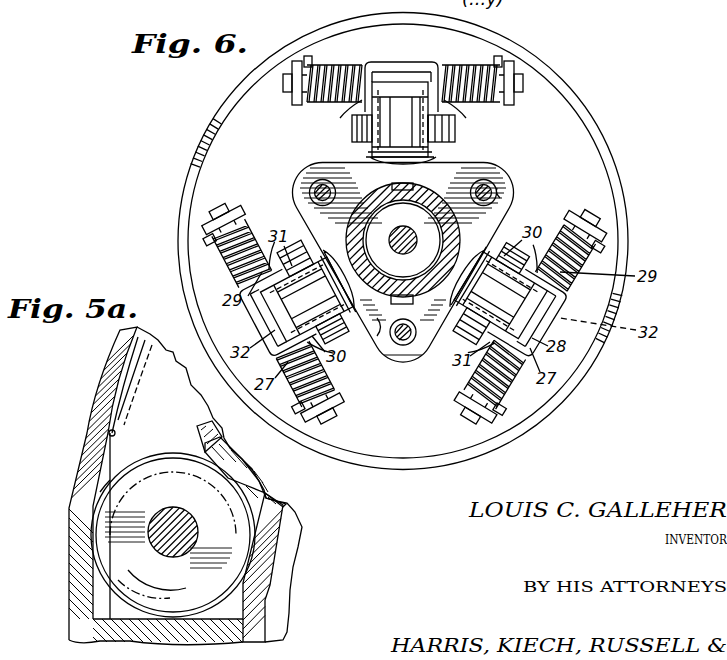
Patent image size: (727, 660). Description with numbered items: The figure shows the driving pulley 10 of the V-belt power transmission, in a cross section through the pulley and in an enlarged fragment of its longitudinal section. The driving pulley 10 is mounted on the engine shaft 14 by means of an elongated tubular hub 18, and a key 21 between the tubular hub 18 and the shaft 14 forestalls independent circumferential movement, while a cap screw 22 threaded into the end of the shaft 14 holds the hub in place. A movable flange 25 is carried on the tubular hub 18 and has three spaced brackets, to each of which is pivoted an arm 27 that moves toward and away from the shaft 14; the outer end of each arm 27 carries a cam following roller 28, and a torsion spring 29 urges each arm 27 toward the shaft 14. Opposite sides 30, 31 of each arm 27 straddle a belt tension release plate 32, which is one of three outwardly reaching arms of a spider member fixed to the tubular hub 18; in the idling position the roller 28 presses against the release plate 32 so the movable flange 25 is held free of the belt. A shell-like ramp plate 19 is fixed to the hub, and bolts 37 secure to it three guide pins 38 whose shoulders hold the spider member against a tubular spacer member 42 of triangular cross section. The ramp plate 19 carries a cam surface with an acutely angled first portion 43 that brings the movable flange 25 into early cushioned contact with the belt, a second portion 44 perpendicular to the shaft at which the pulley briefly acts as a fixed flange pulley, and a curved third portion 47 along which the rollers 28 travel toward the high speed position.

In FIG. 5A, the driving pulley 10 is at (150, 486).
In FIG. 6, the shaft 14 is at (425, 220).
In FIG. 6, the tubular hub 18 is at (451, 228).
In FIG. 5A, the ramp plate 19 is at (72, 588).
In FIG. 6, the key 21 is at (408, 189).
In FIG. 6, the cap screw 22 is at (411, 224).
In FIG. 6, the movable flange 25 is at (622, 197).
In FIG. 6, the arm 27 is at (430, 92).
In FIG. 5A, the arm 27 is at (205, 427).
In FIG. 6, the cam following roller 28 is at (437, 153).
In FIG. 5A, the cam following roller 28 is at (168, 462).
In FIG. 6, the torsion spring 29 is at (327, 62).
In FIG. 6, the side of roller arm 30 is at (362, 103).
In FIG. 6, the side of roller arm 31 is at (450, 110).
In FIG. 6, the belt tension release plate 32 is at (405, 80).
In FIG. 5A, the belt tension release plate 32 is at (270, 560).
In FIG. 6, the bolt 37 is at (501, 197).
In FIG. 6, the guide pin 38 is at (490, 191).
In FIG. 6, the spacer member 42 is at (376, 335).
In FIG. 5A, the first portion of cam surface 43 is at (100, 491).
In FIG. 5A, the second portion of cam surface 44 is at (109, 434).
In FIG. 5A, the third portion of cam surface 47 is at (152, 348).